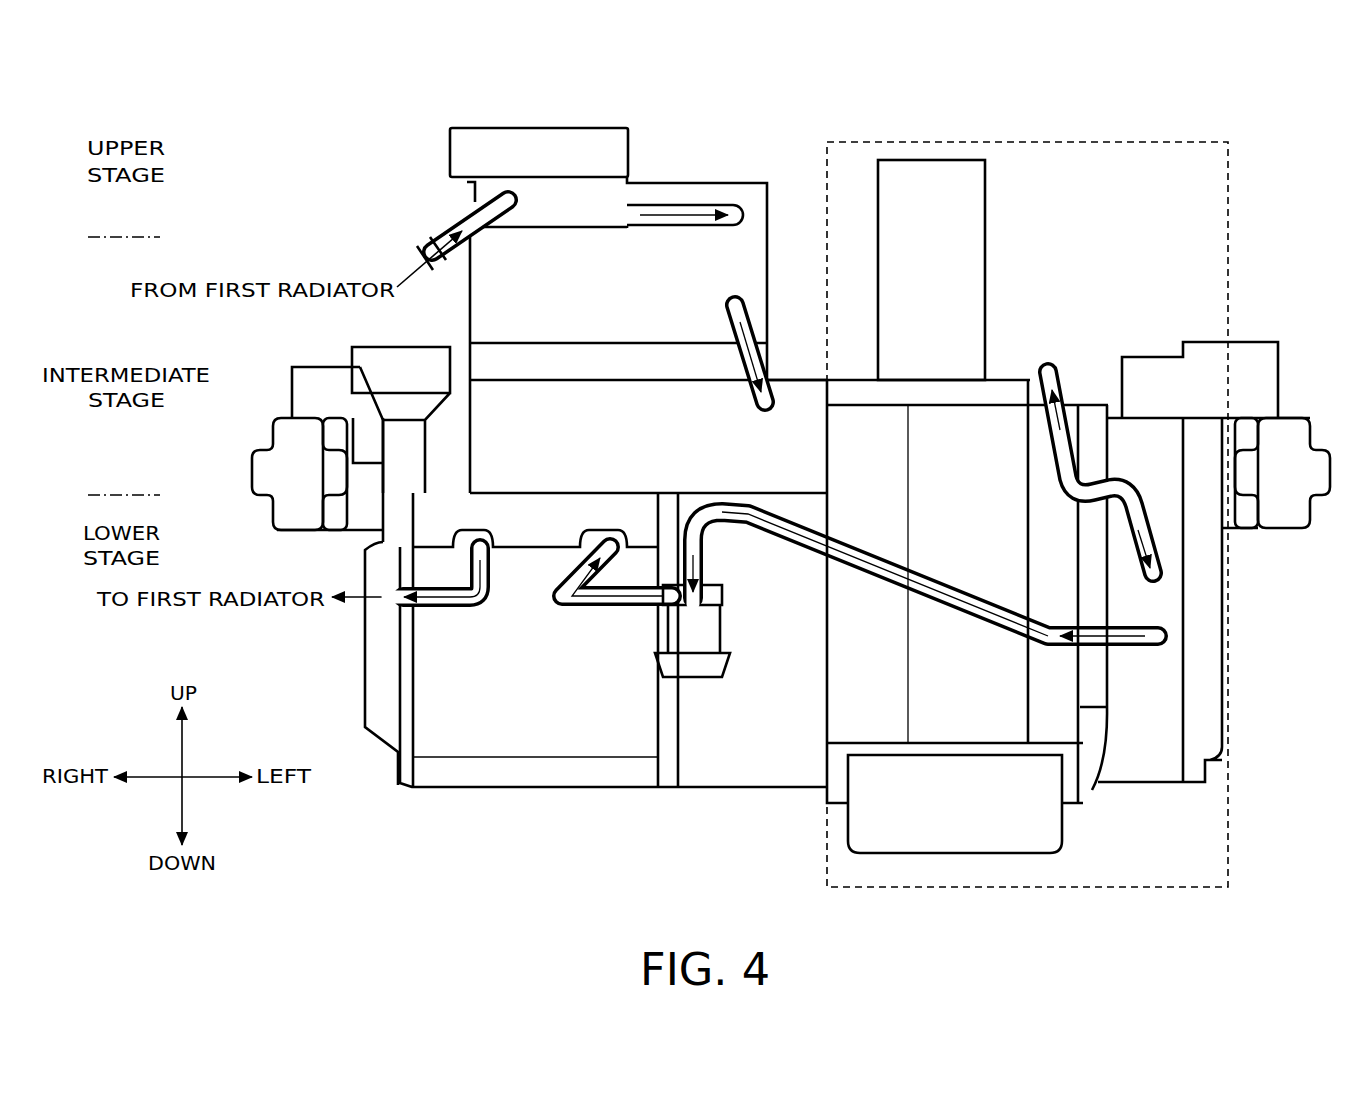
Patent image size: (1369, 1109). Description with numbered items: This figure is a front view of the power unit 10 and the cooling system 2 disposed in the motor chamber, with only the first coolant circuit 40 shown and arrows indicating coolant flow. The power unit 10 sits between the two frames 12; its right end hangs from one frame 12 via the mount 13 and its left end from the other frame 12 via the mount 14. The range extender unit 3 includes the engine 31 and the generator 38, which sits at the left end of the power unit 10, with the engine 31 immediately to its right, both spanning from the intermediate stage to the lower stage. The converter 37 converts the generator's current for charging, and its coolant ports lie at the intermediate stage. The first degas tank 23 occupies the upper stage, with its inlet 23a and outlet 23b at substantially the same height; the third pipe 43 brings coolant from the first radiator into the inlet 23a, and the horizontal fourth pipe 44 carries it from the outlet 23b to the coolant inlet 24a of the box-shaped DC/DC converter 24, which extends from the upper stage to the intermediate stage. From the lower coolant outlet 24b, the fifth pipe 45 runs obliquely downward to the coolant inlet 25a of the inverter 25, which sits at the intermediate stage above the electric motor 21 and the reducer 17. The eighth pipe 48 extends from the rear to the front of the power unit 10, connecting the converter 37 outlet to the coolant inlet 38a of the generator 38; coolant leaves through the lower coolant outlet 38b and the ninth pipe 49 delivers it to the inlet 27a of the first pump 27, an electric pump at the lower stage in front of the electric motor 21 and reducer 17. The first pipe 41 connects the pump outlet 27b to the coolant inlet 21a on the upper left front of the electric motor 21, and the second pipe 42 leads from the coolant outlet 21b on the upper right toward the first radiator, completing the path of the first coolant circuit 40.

The cooling system 2 is at (383, 124).
The range extender unit 3 is at (1107, 140).
The power unit 10 is at (348, 795).
The frame 12 is at (285, 532).
The mount 13 is at (352, 350).
The mount 14 is at (1280, 364).
The reducer 17 is at (745, 790).
The electric motor 21 is at (596, 676).
The coolant inlet of the electric motor 21a is at (582, 538).
The coolant outlet of the electric motor 21b is at (450, 617).
The first degas tank 23 is at (590, 127).
The inlet of the first degas tank 23a is at (515, 212).
The outlet of the first degas tank 23b is at (612, 228).
The DC/DC converter 24 is at (692, 182).
The coolant inlet of the DC/DC converter 24a is at (740, 208).
The coolant outlet of the DC/DC converter 24b is at (706, 320).
The inverter 25 is at (786, 379).
The coolant inlet of the inverter 25a is at (757, 416).
The first pump 27 is at (732, 636).
The inlet of the first pump 27a is at (712, 576).
The outlet of the first pump 27b is at (665, 660).
The engine 31 is at (998, 385).
The converter 37 is at (988, 200).
The generator 38 is at (1035, 634).
The coolant inlet of the generator 38a is at (1148, 578).
The coolant outlet of the generator 38b is at (1150, 660).
The first coolant circuit 40 is at (518, 678).
The first pipe 41 is at (600, 612).
The second pipe 42 is at (442, 653).
The third pipe 43 is at (440, 226).
The fourth pipe 44 is at (655, 228).
The fifth pipe 45 is at (725, 333).
The eighth pipe 48 is at (1104, 498).
The ninth pipe 49 is at (925, 574).